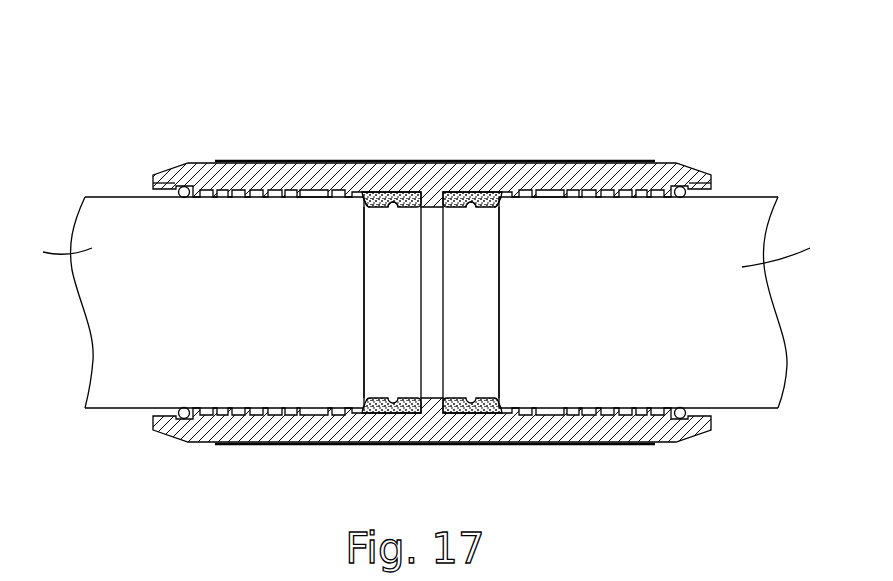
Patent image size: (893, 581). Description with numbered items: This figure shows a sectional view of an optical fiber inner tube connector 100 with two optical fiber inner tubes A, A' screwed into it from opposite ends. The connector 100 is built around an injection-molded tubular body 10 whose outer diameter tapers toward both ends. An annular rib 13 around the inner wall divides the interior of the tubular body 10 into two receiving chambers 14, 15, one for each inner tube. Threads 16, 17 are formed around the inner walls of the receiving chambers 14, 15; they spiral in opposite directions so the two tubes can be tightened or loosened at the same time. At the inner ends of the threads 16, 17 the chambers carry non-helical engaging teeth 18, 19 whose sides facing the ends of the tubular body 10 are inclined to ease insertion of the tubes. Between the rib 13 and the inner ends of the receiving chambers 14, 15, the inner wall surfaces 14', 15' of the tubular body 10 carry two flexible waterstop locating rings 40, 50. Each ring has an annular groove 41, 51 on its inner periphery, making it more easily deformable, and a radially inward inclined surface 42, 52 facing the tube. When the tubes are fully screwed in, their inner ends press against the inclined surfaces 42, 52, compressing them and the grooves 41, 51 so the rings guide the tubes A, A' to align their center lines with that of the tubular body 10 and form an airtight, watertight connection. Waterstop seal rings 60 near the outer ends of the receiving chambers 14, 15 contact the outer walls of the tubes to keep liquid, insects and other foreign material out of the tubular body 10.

The optical fiber inner tube connector 100 is at (470, 75).
The tubular body 10 is at (425, 191).
The rib 13 is at (433, 380).
The receiving chamber 14 is at (217, 272).
The receiving chamber 15 is at (643, 273).
The inner wall surface 14' is at (340, 302).
The inner wall surface 15' is at (523, 302).
The thread 16 is at (229, 190).
The thread 17 is at (631, 190).
The engaging tooth 18 is at (336, 190).
The engaging tooth 19 is at (518, 190).
The waterstop locating ring 40 is at (378, 191).
The annular groove 41 is at (396, 212).
The inclined surface 42 is at (364, 207).
The waterstop locating ring 50 is at (453, 210).
The annular groove 51 is at (470, 208).
The inclined surface 52 is at (497, 207).
The waterstop seal ring 60 is at (183, 188).